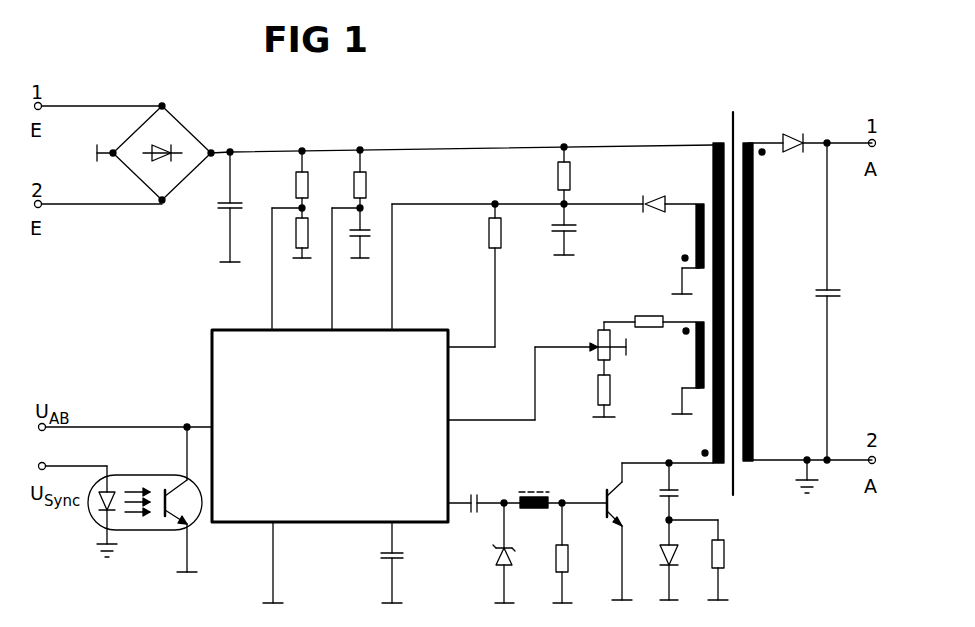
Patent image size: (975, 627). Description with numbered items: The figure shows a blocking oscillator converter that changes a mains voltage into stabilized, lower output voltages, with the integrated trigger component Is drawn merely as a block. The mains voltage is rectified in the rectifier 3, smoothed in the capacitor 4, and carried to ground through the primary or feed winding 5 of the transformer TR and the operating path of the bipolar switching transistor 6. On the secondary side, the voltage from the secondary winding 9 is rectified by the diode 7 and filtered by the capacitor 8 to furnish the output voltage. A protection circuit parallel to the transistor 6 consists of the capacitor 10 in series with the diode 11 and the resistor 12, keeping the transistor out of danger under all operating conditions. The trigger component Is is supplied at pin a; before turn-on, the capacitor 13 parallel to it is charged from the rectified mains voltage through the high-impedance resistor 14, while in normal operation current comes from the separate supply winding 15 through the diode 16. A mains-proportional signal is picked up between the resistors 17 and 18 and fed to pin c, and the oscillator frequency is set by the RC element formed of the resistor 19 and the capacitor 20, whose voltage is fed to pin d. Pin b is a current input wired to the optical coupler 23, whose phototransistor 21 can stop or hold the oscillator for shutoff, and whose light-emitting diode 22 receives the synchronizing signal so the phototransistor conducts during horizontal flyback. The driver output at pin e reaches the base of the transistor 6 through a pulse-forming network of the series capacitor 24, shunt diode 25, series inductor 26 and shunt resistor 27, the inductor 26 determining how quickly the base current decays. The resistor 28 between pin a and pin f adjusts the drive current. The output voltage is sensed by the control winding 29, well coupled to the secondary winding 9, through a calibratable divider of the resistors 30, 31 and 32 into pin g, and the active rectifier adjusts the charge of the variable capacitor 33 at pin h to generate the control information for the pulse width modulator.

The rectifier 3 is at (155, 153).
The capacitor 4 is at (221, 207).
The primary or feed winding 5 is at (713, 182).
The bipolar transistor 6 is at (623, 531).
The diode 7 is at (791, 146).
The capacitor 8 is at (832, 303).
The secondary winding 9 is at (753, 208).
The capacitor 10 is at (683, 493).
The diode 11 is at (660, 560).
The resistor 12 is at (710, 560).
The capacitor 13 is at (577, 229).
The high-impedance resistor 14 is at (578, 175).
The supply winding 15 is at (696, 237).
The diode 16 is at (668, 189).
The resistor 17 is at (315, 179).
The resistor 18 is at (293, 233).
The resistor 19 is at (373, 179).
The capacitor 20 is at (369, 233).
The phototransistor 21 is at (170, 478).
The light-emitting diode 22 is at (111, 478).
The optical coupler 23 is at (148, 530).
The series capacitor 24 is at (476, 489).
The shunt diode 25 is at (516, 553).
The series inductor 26 is at (533, 486).
The shunt resistor 27 is at (574, 553).
The resistor 28 is at (481, 274).
The control winding 29 is at (696, 354).
The resistor 30 is at (650, 309).
The resistor 31 is at (600, 340).
The resistor 32 is at (595, 388).
The variable capacitor 33 is at (405, 562).
The transformer TR is at (740, 140).
The trigger component Is is at (330, 426).